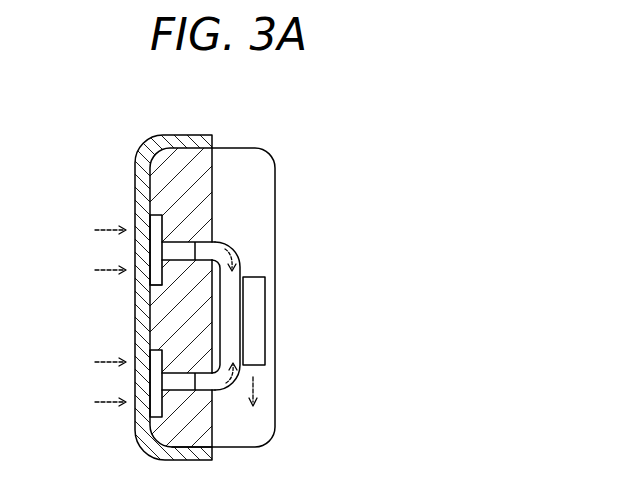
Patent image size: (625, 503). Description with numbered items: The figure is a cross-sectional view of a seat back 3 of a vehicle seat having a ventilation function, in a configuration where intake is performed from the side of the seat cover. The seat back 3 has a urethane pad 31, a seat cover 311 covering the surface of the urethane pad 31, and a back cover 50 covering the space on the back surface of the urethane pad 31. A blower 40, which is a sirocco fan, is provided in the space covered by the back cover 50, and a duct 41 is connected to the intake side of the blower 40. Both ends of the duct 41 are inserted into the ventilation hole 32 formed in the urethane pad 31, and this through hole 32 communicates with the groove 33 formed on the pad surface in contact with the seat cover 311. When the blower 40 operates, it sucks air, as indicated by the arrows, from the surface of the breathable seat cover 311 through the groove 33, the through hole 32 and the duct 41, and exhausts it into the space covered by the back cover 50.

The seat back 3 is at (348, 145).
The urethane pad 31 is at (160, 188).
The seat cover 311 is at (140, 165).
The ventilation hole 32 is at (157, 250).
The groove 33 is at (157, 284).
The blower 40 is at (255, 328).
The duct 41 is at (240, 250).
The back cover 50 is at (275, 188).